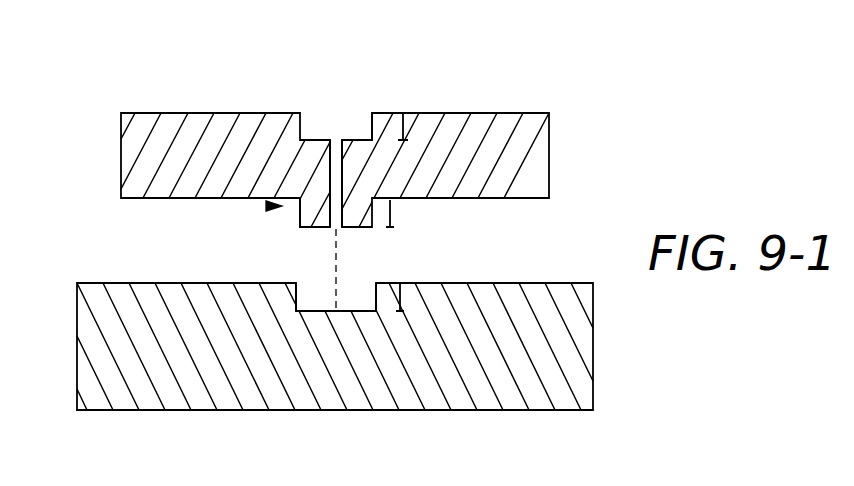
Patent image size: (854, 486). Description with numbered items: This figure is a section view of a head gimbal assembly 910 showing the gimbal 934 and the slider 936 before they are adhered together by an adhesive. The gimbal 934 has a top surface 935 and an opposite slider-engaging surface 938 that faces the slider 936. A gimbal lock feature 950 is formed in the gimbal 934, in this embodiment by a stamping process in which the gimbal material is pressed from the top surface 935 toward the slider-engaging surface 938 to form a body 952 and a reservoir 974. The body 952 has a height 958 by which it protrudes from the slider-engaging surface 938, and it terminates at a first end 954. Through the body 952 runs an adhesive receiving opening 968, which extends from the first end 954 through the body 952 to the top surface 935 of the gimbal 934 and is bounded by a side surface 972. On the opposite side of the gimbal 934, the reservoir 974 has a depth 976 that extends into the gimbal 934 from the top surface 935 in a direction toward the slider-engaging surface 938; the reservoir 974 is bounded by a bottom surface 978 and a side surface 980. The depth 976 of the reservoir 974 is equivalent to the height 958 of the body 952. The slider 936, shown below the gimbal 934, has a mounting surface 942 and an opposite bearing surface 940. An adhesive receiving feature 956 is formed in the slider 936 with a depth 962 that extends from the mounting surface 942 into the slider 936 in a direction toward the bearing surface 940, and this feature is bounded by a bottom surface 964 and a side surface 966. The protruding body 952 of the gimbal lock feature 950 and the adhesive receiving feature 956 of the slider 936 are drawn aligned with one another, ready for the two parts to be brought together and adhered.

The head gimbal assembly 910 is at (615, 155).
The gimbal 934 is at (121, 118).
The top surface 935 is at (158, 113).
The slider 936 is at (77, 357).
The slider-engaging surface 938 is at (525, 202).
The bearing surface 940 is at (558, 411).
The mounting surface 942 is at (523, 283).
The gimbal lock feature 950 is at (267, 206).
The body 952 is at (312, 217).
The first end 954 is at (355, 228).
The adhesive receiving feature 956 is at (319, 312).
The height 958 is at (394, 203).
The depth 962 is at (404, 290).
The bottom surface 964 is at (375, 318).
The side surface 966 is at (296, 300).
The adhesive receiving opening 968 is at (380, 147).
The side surface 972 is at (335, 226).
The reservoir 974 is at (336, 127).
The depth 976 is at (403, 125).
The bottom surface 978 is at (355, 143).
The side surface 980 is at (373, 140).